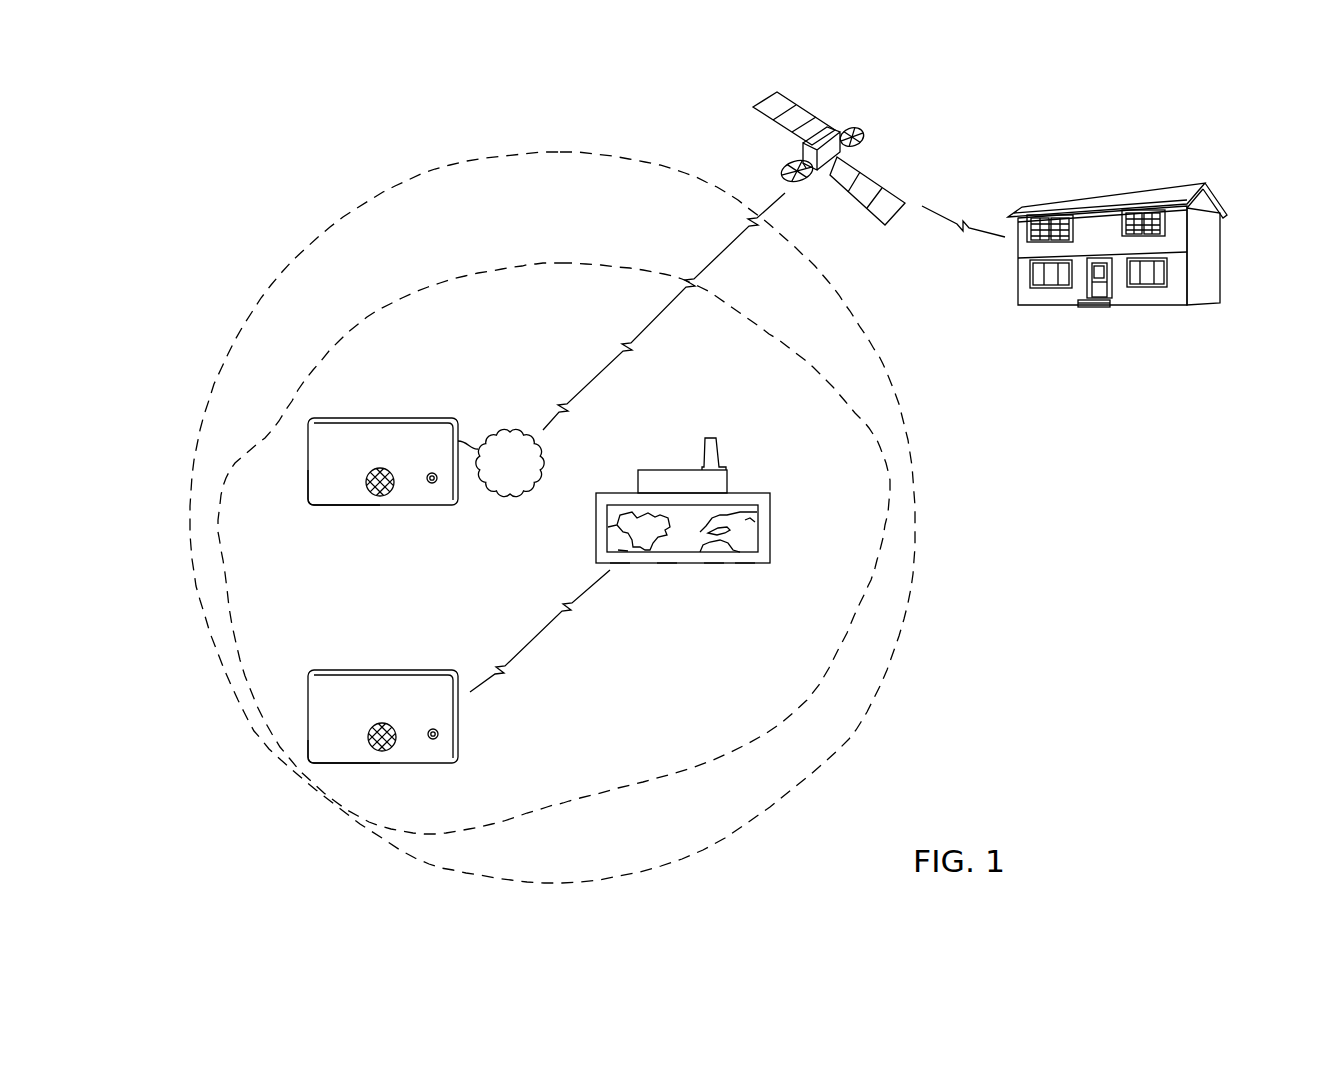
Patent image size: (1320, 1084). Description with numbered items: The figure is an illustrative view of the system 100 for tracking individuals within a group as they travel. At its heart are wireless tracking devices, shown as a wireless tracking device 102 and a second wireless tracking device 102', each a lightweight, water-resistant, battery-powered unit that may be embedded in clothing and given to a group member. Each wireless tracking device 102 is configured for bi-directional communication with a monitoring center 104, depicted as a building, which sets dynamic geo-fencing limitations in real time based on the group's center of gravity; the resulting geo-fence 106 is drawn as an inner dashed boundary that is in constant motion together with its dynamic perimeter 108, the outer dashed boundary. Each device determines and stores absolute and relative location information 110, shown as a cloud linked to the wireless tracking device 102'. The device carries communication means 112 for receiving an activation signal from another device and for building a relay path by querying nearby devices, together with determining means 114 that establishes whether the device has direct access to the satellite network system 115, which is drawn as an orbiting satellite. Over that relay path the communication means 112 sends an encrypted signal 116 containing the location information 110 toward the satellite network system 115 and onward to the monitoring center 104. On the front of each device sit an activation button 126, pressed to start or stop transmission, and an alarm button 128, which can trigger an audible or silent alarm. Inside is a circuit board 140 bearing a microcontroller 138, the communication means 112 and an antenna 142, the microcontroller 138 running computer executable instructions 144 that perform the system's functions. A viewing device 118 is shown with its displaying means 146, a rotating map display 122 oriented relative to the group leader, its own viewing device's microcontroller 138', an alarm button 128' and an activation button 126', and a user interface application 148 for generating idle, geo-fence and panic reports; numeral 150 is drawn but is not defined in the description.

The system 100 is at (362, 186).
The wireless tracking device 102 is at (383, 685).
The wireless tracking device 102' is at (383, 427).
The monitoring center 104 is at (1170, 192).
The geo-fence 106 is at (293, 262).
The dynamic perimeter 108 is at (860, 603).
The location information 110 is at (510, 462).
The communication means 112 is at (335, 506).
The determining means 114 is at (307, 680).
The satellite network system 115 is at (880, 184).
The encrypted signal 116 is at (508, 432).
The viewing device 118 is at (667, 565).
The rotating map display 122 is at (752, 535).
The activation button 126 is at (464, 772).
The activation button 126' is at (466, 516).
The alarm button 128 is at (393, 775).
The alarm button 128' is at (398, 518).
The microcontroller 138 is at (402, 689).
The viewing device's microcontroller 138' is at (776, 600).
The circuit board 140 is at (596, 520).
The antenna 142 is at (712, 438).
The computer executable instructions 144 is at (768, 497).
The displaying means 146 is at (616, 510).
The user interface application 148 is at (714, 565).
The communication module 150 is at (620, 565).